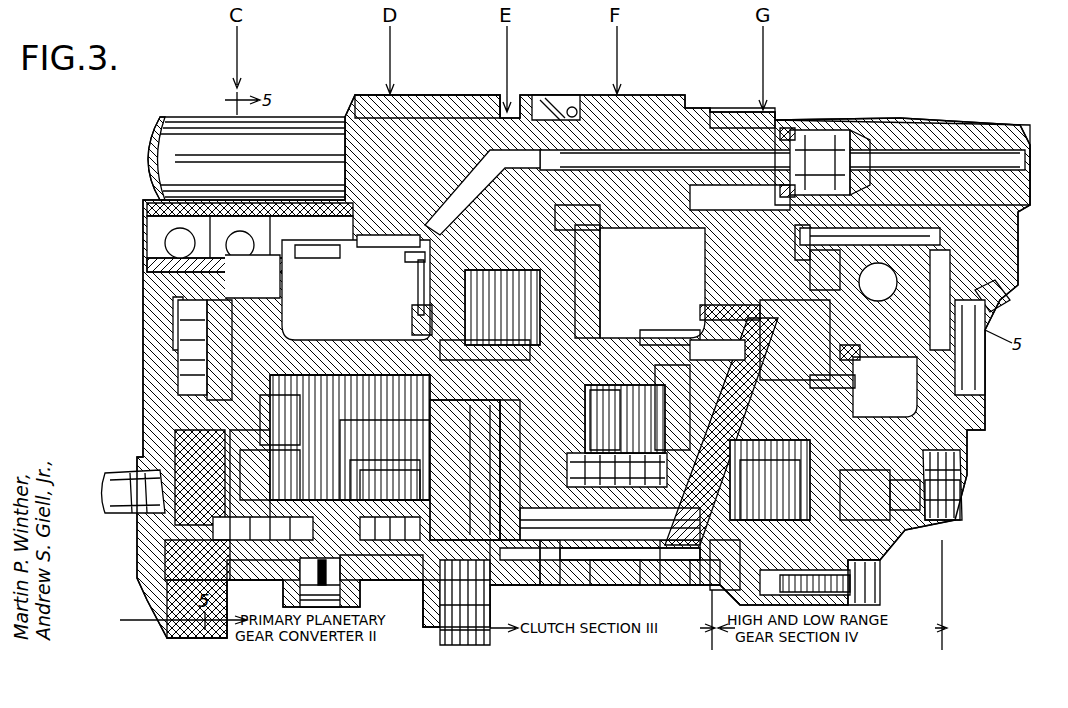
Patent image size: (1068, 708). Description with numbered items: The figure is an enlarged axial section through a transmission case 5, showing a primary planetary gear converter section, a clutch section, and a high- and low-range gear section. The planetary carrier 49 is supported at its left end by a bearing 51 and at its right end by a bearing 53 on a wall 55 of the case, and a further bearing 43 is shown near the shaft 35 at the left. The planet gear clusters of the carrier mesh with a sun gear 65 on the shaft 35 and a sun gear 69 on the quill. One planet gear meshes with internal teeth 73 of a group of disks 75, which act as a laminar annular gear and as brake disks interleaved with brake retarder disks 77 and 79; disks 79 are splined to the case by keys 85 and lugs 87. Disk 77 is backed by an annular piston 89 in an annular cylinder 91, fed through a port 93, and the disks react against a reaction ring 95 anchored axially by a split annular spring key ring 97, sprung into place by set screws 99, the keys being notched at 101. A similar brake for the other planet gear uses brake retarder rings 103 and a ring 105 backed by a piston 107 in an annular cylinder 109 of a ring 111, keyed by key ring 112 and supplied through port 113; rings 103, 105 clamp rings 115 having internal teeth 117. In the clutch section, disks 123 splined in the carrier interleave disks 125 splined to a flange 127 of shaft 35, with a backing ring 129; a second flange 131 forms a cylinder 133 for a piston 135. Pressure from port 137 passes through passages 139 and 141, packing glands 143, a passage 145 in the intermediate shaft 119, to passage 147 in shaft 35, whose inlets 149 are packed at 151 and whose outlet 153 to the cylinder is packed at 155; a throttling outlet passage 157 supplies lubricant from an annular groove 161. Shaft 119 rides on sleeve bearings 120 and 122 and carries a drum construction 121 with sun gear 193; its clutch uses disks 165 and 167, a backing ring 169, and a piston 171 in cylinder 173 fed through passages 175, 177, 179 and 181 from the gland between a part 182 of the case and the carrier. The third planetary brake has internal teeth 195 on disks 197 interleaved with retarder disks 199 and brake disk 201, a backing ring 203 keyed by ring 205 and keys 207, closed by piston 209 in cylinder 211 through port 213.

The shaft 35 is at (160, 160).
The ball bearing 43 is at (166, 240).
The planetary carrier 49 is at (313, 340).
The bearing 51 is at (270, 265).
The sun gear 69 is at (316, 250).
The sun gear 65 is at (375, 240).
The flange 127 is at (420, 260).
The annular groove 161 is at (418, 287).
The backing ring 129 is at (412, 312).
The internal teeth 73 is at (270, 398).
The annular piston 89 is at (180, 455).
The port 93 is at (172, 510).
The brake retarder disk 77 is at (250, 470).
The internal teeth 117 is at (420, 395).
The disks 75 is at (240, 420).
The brake retarder disks 79 is at (240, 470).
The brake retarder rings 103 is at (410, 450).
The rings 115 is at (400, 470).
The reaction ring 95 is at (405, 490).
The lugs 87 is at (230, 530).
The keys 85 is at (215, 560).
The annular cylinder 91 is at (172, 570).
The split annular spring key ring 97 is at (270, 578).
The set screw 99 is at (342, 575).
The notch 101 is at (390, 565).
The annular cylinder 109 is at (430, 590).
The port 113 is at (465, 602).
The passage 181 is at (600, 558).
The ring 111 is at (520, 575).
The key ring 112 is at (545, 578).
The case 5 is at (570, 575).
The cylinder 173 is at (600, 575).
The passage 179 is at (668, 560).
The ring 205 is at (705, 590).
The backing ring 203 is at (722, 588).
The operating piston 171 is at (610, 524).
The backing ring 169 is at (617, 473).
The disks 165 is at (630, 395).
The cylinder 133 is at (605, 395).
The disks 167 is at (660, 410).
The second flange 131 is at (582, 270).
The piston 135 is at (585, 284).
The outlet 153 is at (570, 218).
The drum construction 121 is at (660, 335).
The sun gear 193 is at (730, 317).
The disks 125 is at (500, 315).
The disks 123 is at (480, 350).
The ring 105 is at (442, 415).
The piston 107 is at (505, 405).
The internal teeth 195 is at (820, 425).
The passage 177 is at (795, 340).
The ring-gear-brake disks 197 is at (760, 480).
The brake retarder disks 199 is at (770, 495).
The passage 147 is at (782, 160).
The inlets 149 is at (795, 158).
The packing 151 is at (790, 128).
The passage 145 is at (855, 168).
The sleeve bearing 120 is at (745, 118).
The intermediate shaft 119 is at (905, 128).
The throttling outlet passage 157 is at (468, 112).
The packing 155 is at (562, 98).
The passage 141 is at (870, 236).
The part of case 182 is at (795, 250).
The packing glands 143 is at (810, 275).
The bearing 53 is at (878, 282).
The sleeve bearing 122 is at (1002, 298).
The passage 139 is at (975, 390).
The wall 55 is at (930, 380).
The passage 175 is at (848, 352).
The port 137 is at (956, 485).
The port 213 is at (942, 500).
The brake disk 201 is at (860, 500).
The operating piston 209 is at (905, 508).
The cylinder 211 is at (865, 560).
The keys 207 is at (845, 560).